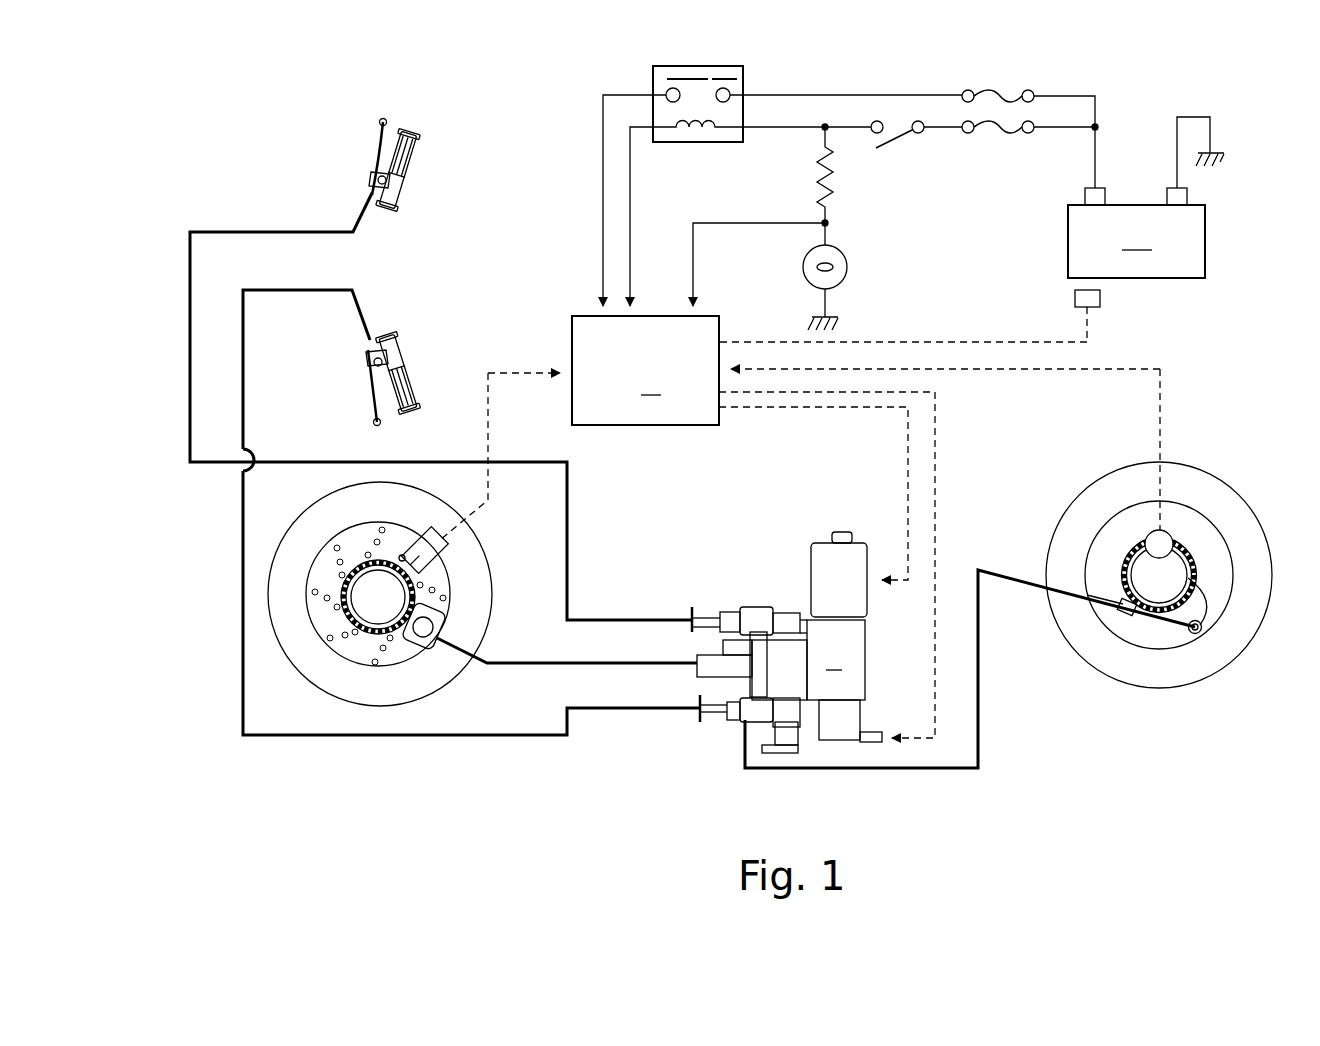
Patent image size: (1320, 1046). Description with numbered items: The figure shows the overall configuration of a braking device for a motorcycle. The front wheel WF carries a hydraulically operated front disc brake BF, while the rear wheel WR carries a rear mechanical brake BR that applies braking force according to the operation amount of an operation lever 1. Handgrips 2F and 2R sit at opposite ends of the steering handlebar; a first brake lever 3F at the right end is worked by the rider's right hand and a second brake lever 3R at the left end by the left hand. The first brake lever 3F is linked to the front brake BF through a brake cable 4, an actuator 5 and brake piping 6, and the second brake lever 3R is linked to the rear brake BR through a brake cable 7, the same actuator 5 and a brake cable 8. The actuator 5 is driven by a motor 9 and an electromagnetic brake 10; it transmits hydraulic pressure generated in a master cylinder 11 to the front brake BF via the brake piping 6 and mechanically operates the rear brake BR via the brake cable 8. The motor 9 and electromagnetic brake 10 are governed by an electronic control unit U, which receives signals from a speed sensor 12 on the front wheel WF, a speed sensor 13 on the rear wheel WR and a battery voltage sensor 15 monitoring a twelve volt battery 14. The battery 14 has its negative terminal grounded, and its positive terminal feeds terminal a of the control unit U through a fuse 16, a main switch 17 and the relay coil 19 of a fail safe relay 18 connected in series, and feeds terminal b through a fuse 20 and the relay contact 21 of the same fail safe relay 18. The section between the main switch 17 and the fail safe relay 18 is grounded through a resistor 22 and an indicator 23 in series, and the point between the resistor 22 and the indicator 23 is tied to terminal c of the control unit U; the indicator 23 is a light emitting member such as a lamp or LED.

The operation lever 1 is at (1203, 605).
The handgrip 2F is at (417, 153).
The handgrip 2R is at (412, 378).
The first brake lever 3F is at (373, 148).
The second brake lever 3R is at (370, 382).
The brake cable 4 is at (278, 232).
The actuator 5 is at (778, 680).
The brake piping 6 is at (545, 663).
The brake cable 7 is at (313, 287).
The brake cable 8 is at (980, 713).
The motor 9 is at (845, 567).
The electromagnetic brake 10 is at (850, 717).
The master cylinder 11 is at (715, 668).
The speed sensor 12 is at (420, 553).
The speed sensor 13 is at (1150, 545).
The battery 14 is at (1146, 197).
The battery voltage sensor 15 is at (1100, 298).
The fuse 16 is at (1000, 135).
The main switch 17 is at (898, 148).
The fail safe relay 18 is at (741, 114).
The relay coil 19 is at (692, 143).
The fuse 20 is at (1003, 91).
The relay contact 21 is at (708, 79).
The resistor 22 is at (835, 183).
The indicator 23 is at (847, 270).
The front disc brake BF is at (455, 611).
The rear mechanical brake BR is at (1190, 535).
The front wheel WF is at (288, 640).
The rear wheel WR is at (1132, 672).
The electronic control unit U is at (824, 527).